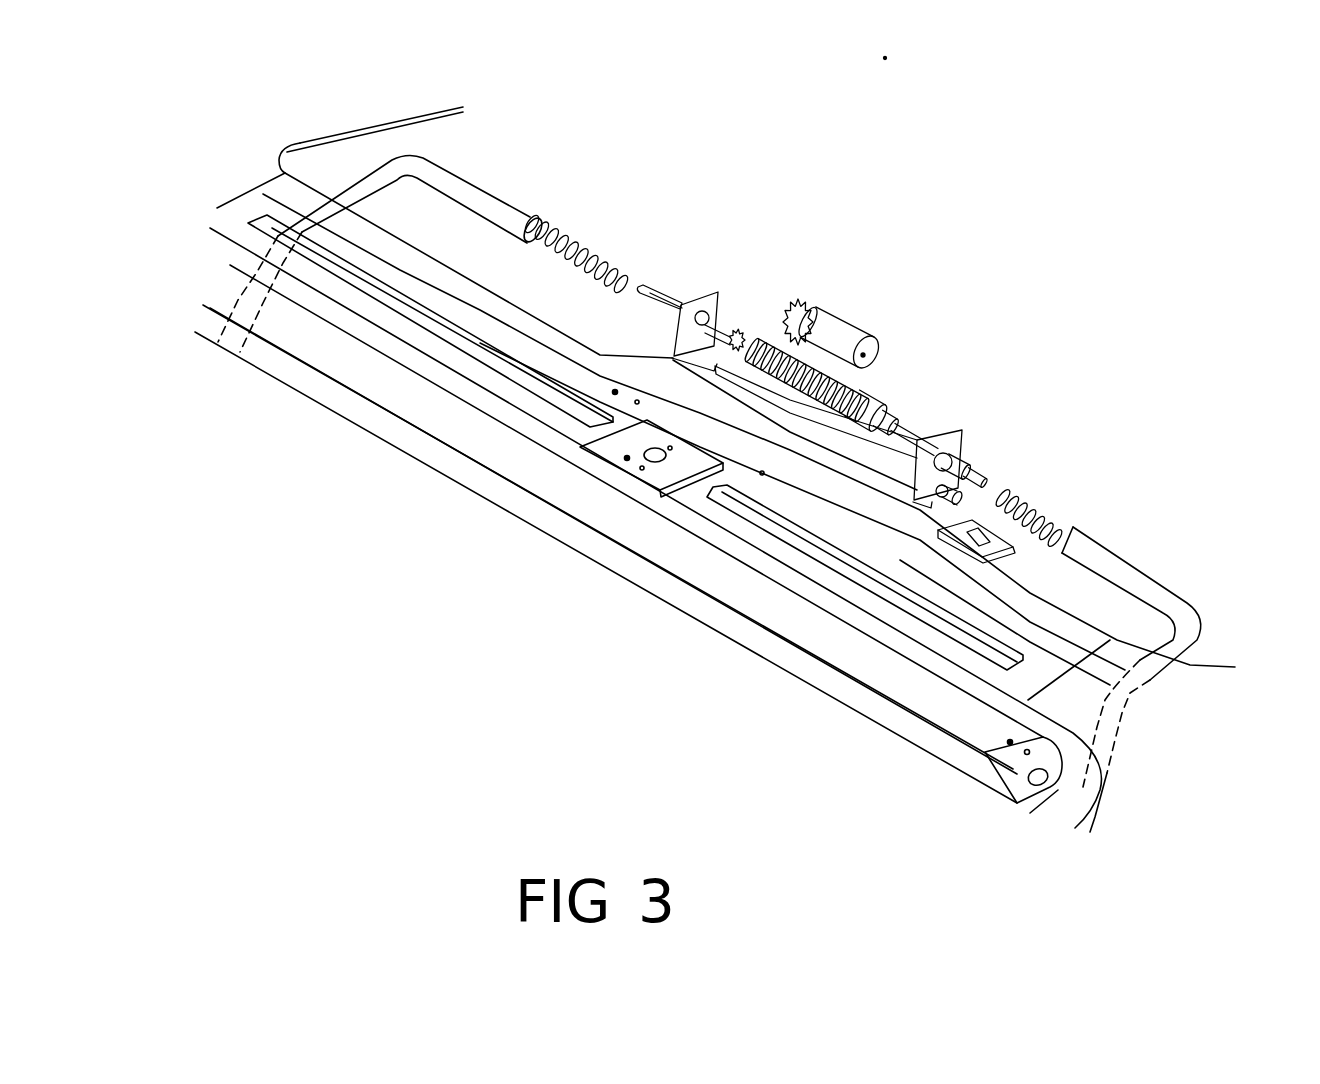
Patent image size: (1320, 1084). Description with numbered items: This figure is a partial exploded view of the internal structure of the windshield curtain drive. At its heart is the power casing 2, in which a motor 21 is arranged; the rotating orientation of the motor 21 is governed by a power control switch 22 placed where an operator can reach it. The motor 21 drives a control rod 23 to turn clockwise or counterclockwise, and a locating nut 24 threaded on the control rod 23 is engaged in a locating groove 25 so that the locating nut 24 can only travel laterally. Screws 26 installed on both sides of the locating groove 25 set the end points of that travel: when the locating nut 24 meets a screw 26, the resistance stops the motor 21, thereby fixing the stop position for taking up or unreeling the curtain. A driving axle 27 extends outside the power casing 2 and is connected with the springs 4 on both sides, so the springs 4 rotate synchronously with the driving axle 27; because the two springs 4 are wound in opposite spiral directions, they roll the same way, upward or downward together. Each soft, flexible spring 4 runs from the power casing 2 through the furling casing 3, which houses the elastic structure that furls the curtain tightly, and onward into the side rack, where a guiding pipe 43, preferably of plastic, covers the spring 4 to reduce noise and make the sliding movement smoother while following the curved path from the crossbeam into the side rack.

The power casing 2 is at (747, 282).
The furling casing 3 is at (977, 763).
The spring 4 is at (557, 235).
The motor 21 is at (840, 337).
The power control switch 22 is at (1005, 538).
The control rod 23 is at (855, 405).
The locating nut 24 is at (872, 412).
The locating groove 25 is at (900, 437).
The screw 26 is at (702, 312).
The driving axle 27 is at (658, 298).
The guiding pipe 43 is at (385, 175).